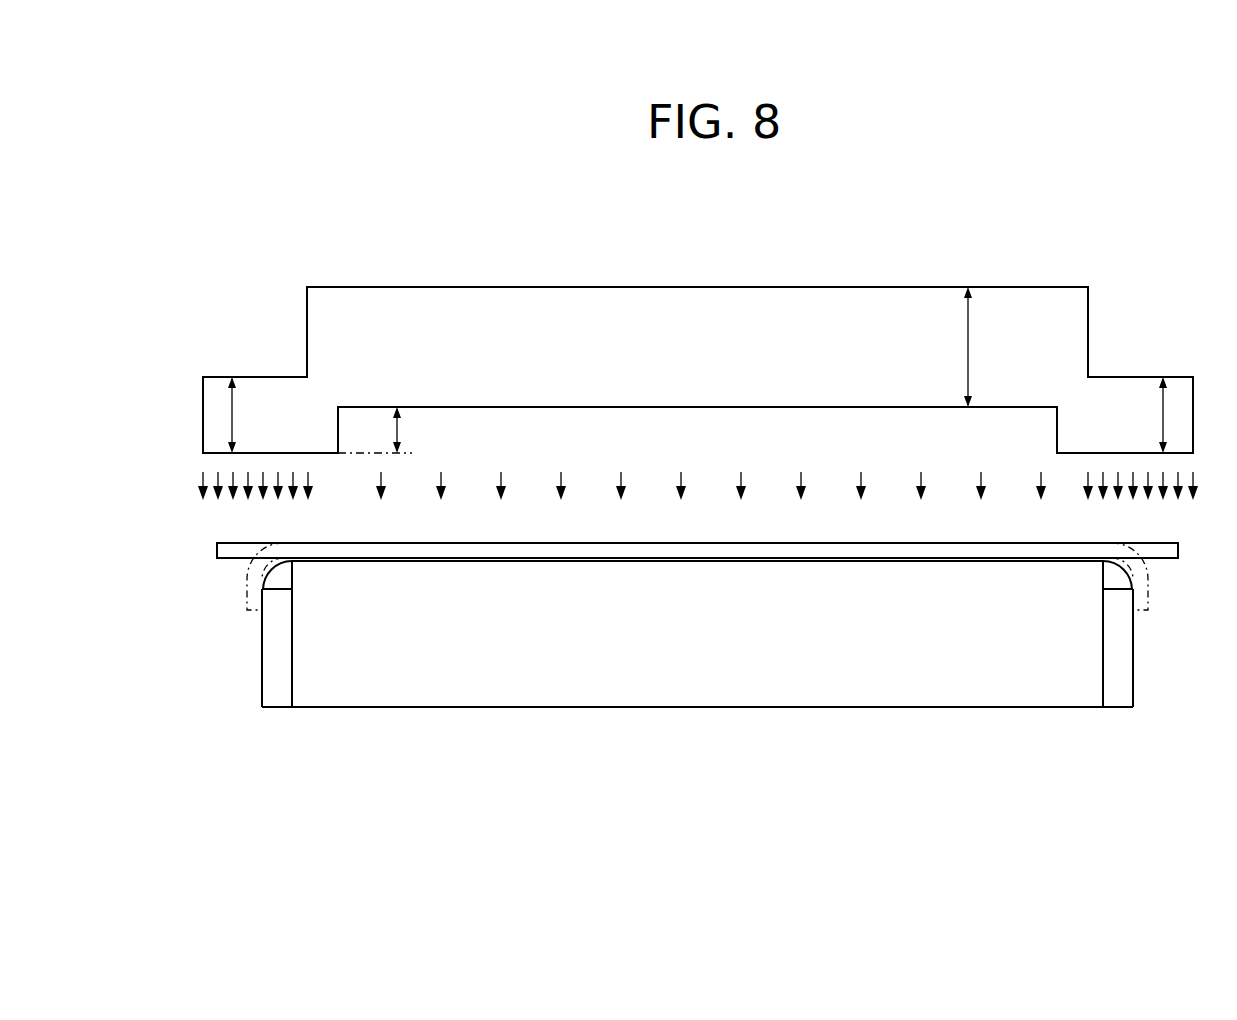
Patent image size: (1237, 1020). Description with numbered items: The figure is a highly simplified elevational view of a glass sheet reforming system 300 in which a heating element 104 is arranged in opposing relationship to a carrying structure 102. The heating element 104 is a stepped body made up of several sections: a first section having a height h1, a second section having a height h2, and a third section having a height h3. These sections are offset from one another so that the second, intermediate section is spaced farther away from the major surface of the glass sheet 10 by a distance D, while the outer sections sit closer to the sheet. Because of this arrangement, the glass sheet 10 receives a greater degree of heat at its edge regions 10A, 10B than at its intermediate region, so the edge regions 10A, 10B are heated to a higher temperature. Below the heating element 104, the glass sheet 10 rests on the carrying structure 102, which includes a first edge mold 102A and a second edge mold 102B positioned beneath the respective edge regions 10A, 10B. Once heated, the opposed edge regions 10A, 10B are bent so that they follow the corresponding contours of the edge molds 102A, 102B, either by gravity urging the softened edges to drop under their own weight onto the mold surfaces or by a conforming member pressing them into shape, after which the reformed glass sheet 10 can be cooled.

The glass sheet reforming system 300 is at (737, 211).
The heating element 104 is at (427, 319).
The height of first section h1 is at (254, 415).
The height of second section h2 is at (947, 347).
The height of third section h3 is at (1142, 415).
The distance D is at (432, 400).
The glass sheet 10 is at (698, 550).
The first edge region 10A is at (231, 572).
The second edge region 10B is at (1161, 573).
The carrying structure 102 is at (697, 669).
The first edge mold 102A is at (277, 578).
The second edge mold 102B is at (1117, 573).